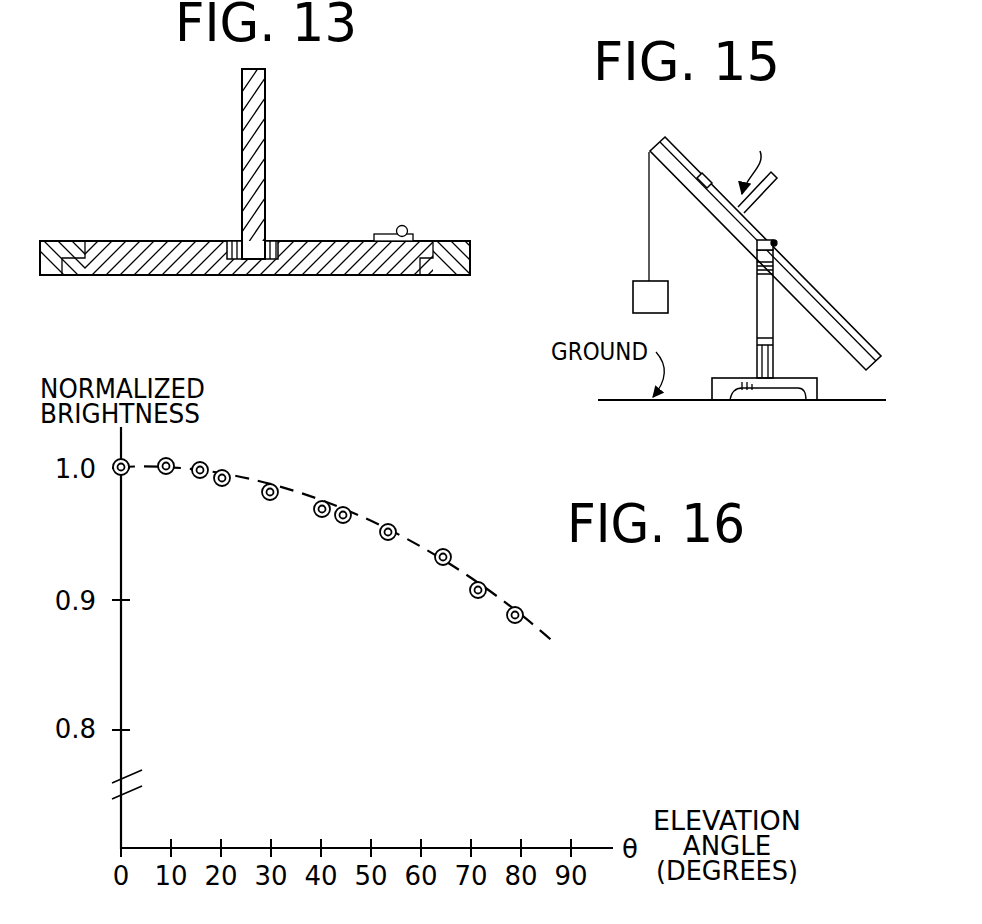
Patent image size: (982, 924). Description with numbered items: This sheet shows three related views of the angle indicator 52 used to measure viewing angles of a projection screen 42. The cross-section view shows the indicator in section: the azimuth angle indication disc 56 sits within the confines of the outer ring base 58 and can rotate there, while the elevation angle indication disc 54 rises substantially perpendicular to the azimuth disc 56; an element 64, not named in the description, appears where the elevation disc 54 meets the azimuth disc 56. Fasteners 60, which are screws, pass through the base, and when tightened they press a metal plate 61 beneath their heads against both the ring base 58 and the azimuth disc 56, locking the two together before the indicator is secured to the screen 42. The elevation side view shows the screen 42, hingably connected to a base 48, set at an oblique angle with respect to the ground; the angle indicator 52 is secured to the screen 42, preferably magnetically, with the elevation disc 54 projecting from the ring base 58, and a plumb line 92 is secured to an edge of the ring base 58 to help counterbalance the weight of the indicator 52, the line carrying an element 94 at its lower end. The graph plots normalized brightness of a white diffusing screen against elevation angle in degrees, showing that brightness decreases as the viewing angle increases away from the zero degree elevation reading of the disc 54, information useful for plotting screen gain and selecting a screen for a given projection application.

In FIG. 15, the screen 42 is at (812, 311).
In FIG. 15, the base 48 is at (758, 293).
In FIG. 15, the angle indicator 52 is at (755, 155).
In FIG. 13, the elevation angle indication disc 54 is at (253, 108).
In FIG. 15, the elevation angle indication disc 54 is at (777, 177).
In FIG. 13, the azimuth angle indication disc 56 is at (352, 243).
In FIG. 13, the outer ring base 58 is at (48, 243).
In FIG. 15, the outer ring base 58 is at (768, 238).
In FIG. 13, the fasteners 60 is at (404, 227).
In FIG. 13, the metal plate 61 is at (425, 236).
In FIG. 15, the metal plate 61 is at (707, 174).
In FIG. 13, the rod bushing 64 is at (228, 242).
In FIG. 15, the plumb line 92 is at (649, 205).
In FIG. 15, the plumb weight 94 is at (633, 297).